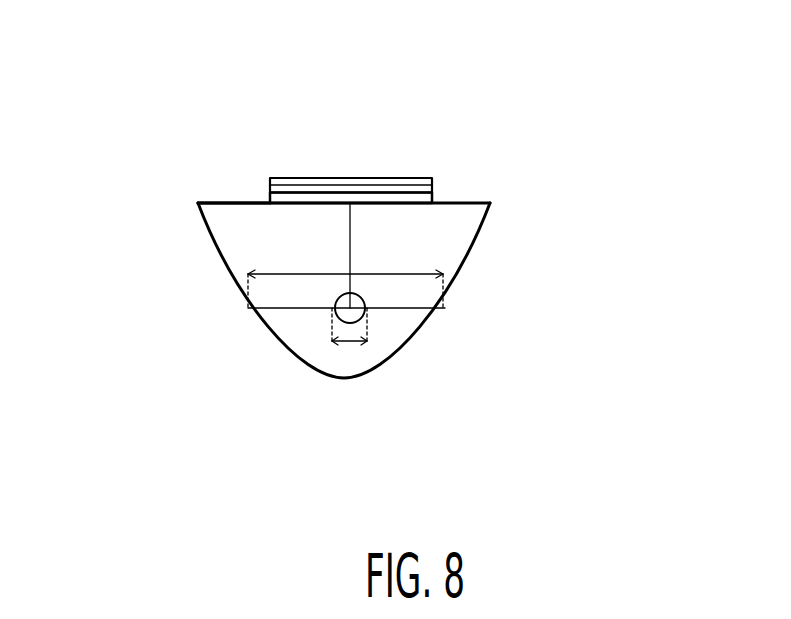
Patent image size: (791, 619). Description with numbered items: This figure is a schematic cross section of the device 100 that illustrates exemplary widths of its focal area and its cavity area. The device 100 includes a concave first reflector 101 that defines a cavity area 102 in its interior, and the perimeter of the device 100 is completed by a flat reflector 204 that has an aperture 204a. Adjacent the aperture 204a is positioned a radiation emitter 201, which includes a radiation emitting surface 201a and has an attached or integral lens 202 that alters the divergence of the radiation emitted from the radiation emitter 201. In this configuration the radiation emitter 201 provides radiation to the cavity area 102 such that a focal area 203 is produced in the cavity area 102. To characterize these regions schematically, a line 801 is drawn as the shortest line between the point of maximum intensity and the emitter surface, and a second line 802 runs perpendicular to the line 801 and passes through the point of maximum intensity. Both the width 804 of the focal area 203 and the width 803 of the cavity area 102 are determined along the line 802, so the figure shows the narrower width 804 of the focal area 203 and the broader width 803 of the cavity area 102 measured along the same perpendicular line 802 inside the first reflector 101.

The device 100 is at (126, 127).
The first reflector 101 is at (458, 287).
The cavity area 102 is at (295, 253).
The radiation emitter 201 is at (367, 187).
The radiation emitting surface 201a is at (297, 186).
The lens 202 is at (426, 194).
The focal area 203 is at (336, 316).
The flat reflector 204 is at (466, 203).
The aperture 204a is at (283, 212).
The line 801 is at (350, 222).
The line 802 is at (403, 308).
The width of the cavity area 803 is at (402, 272).
The width of the focal area 804 is at (350, 347).